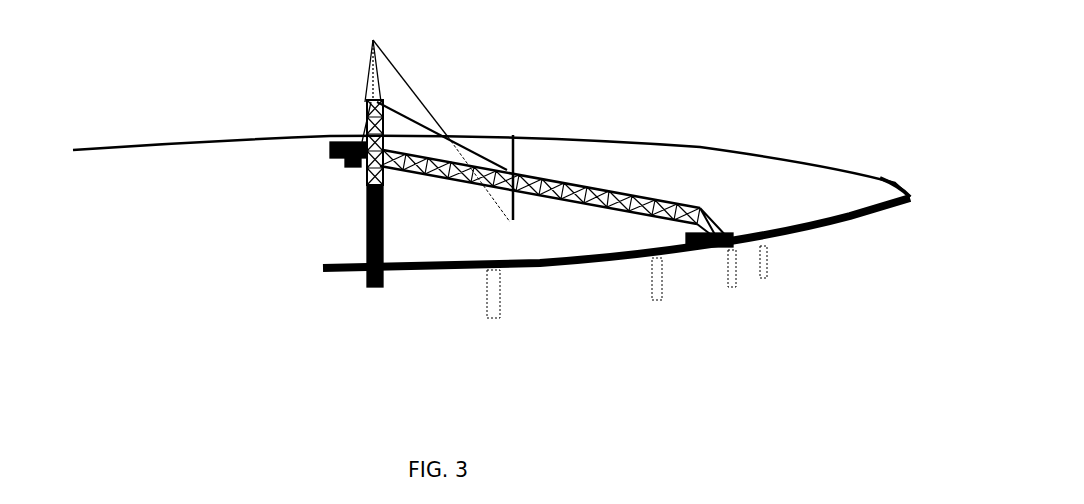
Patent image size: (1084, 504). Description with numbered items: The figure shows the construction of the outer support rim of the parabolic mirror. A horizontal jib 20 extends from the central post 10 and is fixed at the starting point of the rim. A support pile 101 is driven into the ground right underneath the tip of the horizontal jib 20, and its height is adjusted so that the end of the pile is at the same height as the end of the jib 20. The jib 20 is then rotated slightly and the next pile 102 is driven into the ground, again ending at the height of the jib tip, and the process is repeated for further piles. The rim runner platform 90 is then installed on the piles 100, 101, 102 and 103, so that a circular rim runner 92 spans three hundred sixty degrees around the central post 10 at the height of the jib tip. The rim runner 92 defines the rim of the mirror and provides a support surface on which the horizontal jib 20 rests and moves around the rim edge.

The central post 10 is at (356, 222).
The horizontal jib 20 is at (623, 182).
The rim runner platform 90 is at (708, 256).
The rim runner 92 is at (336, 280).
The support pile 100 is at (774, 284).
The support pile 101 is at (737, 299).
The support pile 102 is at (660, 306).
The support pile 103 is at (506, 291).